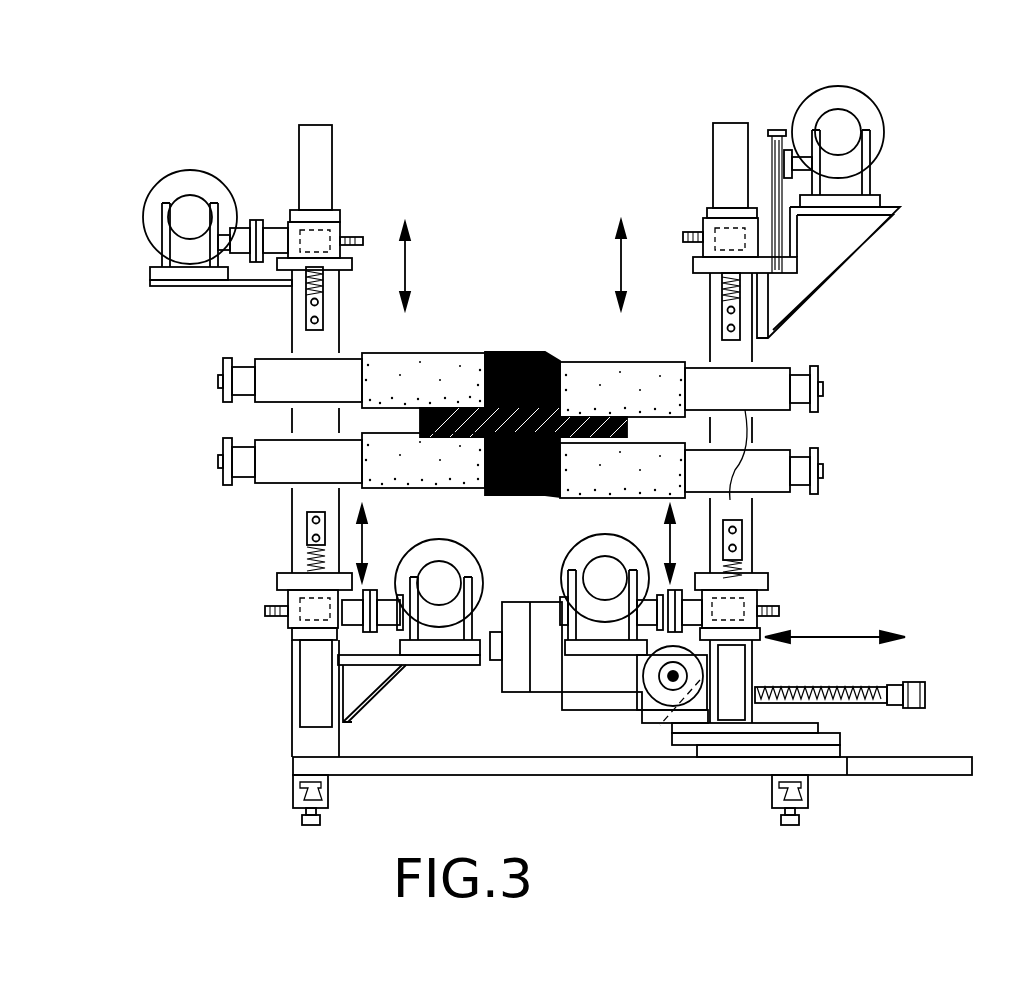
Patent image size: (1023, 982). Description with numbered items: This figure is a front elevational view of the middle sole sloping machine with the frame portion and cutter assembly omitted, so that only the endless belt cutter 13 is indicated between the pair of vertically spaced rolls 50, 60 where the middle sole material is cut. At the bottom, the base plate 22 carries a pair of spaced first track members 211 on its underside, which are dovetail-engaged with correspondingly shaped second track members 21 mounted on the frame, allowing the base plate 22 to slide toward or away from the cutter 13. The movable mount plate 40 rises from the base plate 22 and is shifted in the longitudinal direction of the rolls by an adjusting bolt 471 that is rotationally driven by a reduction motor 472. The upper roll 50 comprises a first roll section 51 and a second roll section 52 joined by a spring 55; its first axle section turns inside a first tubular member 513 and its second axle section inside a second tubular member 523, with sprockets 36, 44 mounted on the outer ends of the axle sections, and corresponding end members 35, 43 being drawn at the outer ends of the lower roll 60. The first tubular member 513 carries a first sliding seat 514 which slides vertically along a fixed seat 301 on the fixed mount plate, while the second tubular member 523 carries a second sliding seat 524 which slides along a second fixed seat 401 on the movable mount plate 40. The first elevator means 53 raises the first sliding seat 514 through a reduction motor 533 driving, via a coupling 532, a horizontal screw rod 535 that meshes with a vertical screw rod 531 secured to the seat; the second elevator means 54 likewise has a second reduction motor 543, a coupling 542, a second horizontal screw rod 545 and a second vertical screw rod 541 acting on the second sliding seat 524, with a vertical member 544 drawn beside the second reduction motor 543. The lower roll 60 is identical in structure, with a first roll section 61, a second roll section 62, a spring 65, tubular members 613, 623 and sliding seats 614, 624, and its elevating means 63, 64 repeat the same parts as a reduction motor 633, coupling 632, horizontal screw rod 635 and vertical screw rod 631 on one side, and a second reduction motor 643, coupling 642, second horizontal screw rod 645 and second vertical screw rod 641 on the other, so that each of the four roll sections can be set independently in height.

The cutter 13 is at (628, 428).
The second track members 21 is at (328, 803).
The base plate 22 is at (598, 777).
The lower roller shaft 35 is at (226, 448).
The sprocket 36 is at (226, 395).
The movable mount plate 40 is at (800, 434).
The lower right shaft 43 is at (808, 480).
The sprocket 44 is at (807, 366).
The upper roll 50 is at (480, 333).
The first roll section 51 is at (420, 352).
The second roll section 52 is at (578, 362).
The first elevator means 53 is at (318, 236).
The second elevator means 54 is at (727, 162).
The spring 55 is at (527, 354).
The lower roll 60 is at (545, 505).
The first roll section 61 is at (416, 572).
The second roll section 62 is at (585, 500).
The elevating means 63 is at (306, 625).
The elevating means 64 is at (780, 614).
The spring 65 is at (528, 500).
The first track members 211 is at (298, 784).
The fixed seat 301 is at (345, 272).
The second fixed seat 401 is at (716, 287).
The adjusting bolt 471 is at (845, 690).
The reduction motor 472 is at (538, 614).
The first tubular member 513 is at (342, 358).
The first sliding seat 514 is at (296, 351).
The second tubular member 523 is at (775, 395).
The second sliding seat 524 is at (702, 362).
The vertical screw rod 531 is at (318, 210).
The coupling 532 is at (283, 232).
The reduction motor 533 is at (232, 152).
The horizontal screw rod 535 is at (284, 286).
The second vertical screw rod 541 is at (712, 240).
The coupling 542 is at (784, 240).
The second reduction motor 543 is at (880, 122).
The vertical pin 544 is at (777, 130).
The second horizontal screw rod 545 is at (805, 283).
The first tubular member 613 is at (270, 470).
The first sliding seat 614 is at (300, 522).
The second tubular member 623 is at (775, 482).
The second sliding seat 624 is at (737, 434).
The vertical screw rod 631 is at (278, 582).
The coupling 632 is at (395, 646).
The reduction motor 633 is at (438, 562).
The horizontal screw rod 635 is at (320, 632).
The second vertical screw rod 641 is at (757, 582).
The coupling 642 is at (646, 650).
The second reduction motor 643 is at (626, 553).
The second horizontal screw rod 645 is at (666, 733).